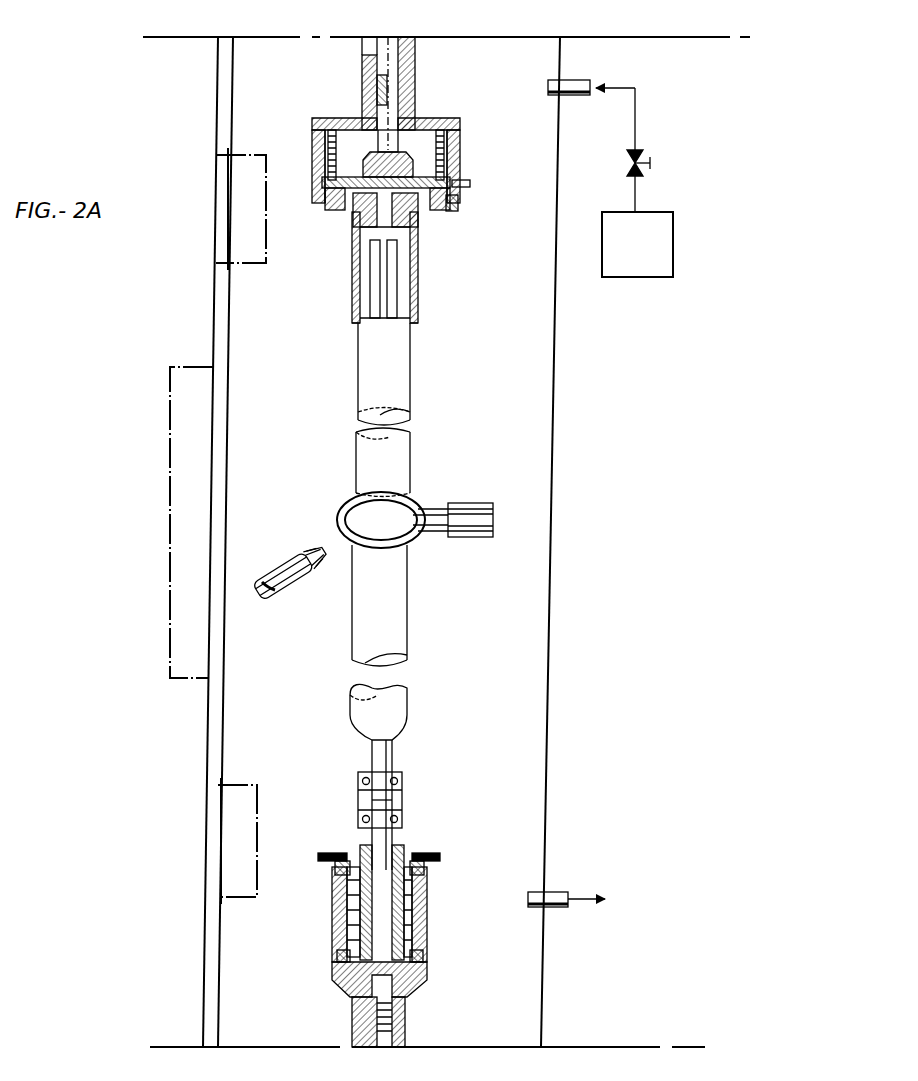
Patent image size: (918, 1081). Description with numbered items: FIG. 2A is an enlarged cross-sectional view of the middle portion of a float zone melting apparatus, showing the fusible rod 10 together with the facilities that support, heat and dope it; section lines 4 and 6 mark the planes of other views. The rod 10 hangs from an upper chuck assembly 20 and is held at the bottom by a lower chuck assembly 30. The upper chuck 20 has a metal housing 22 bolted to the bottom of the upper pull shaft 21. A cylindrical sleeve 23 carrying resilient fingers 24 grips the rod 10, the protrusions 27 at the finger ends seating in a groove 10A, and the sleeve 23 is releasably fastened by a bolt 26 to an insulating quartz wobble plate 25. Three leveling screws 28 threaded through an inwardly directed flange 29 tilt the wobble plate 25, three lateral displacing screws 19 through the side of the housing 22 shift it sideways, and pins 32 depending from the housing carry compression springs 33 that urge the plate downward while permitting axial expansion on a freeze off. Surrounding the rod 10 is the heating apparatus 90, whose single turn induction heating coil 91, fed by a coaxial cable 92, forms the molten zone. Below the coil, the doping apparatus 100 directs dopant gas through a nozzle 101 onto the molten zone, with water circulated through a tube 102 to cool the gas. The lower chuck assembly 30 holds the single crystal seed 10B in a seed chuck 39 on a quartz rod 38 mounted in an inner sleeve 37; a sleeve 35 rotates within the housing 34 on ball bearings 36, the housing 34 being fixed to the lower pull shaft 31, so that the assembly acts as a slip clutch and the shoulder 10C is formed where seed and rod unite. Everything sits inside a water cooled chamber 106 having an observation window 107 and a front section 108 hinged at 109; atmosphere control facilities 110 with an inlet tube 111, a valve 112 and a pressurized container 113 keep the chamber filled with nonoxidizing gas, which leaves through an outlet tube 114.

The section line 4- 4 is at (305, 140).
The section line 6- 6 is at (330, 522).
The rod 10 is at (424, 596).
The groove 10A is at (384, 374).
The single crystal seed 10B is at (378, 755).
The shoulder 10C is at (394, 735).
The lateral displacing screws 19 is at (472, 184).
The upper chuck assembly 20 is at (400, 194).
The upper pull shaft 21 is at (415, 58).
The housing 22 is at (460, 160).
The cylindrical sleeve 23 is at (418, 256).
The resilient fingers 24 is at (372, 300).
The wobble plate 25 is at (322, 183).
The bolt 26 is at (356, 222).
The protrusions 27 is at (355, 326).
The leveling screws 28 is at (330, 205).
The inwardly directed flange 29 is at (460, 203).
The lower chuck assembly 30 is at (418, 909).
The lower pull shaft 31 is at (352, 1020).
The pins 32 is at (333, 130).
The compression springs 33 is at (366, 145).
The housing 34 is at (340, 988).
The sleeve 35 is at (352, 905).
The ball bearings 36 is at (335, 866).
The inner sleeve 37 is at (366, 935).
The quartz rod 38 is at (402, 925).
The seed chuck 39 is at (403, 800).
The heating apparatus 90 is at (433, 507).
The induction heating coil 91 is at (412, 540).
The coaxial cable 92 is at (478, 540).
The doping apparatus 100 is at (278, 609).
The nozzle 101 is at (290, 571).
The tube 102 is at (255, 573).
The chamber 106 is at (548, 590).
The observation window 107 is at (170, 557).
The front section 108 is at (215, 700).
The hinges 109 is at (252, 264).
The atmosphere control facilities 110 is at (672, 187).
The inlet tube 111 is at (566, 82).
The valve 112 is at (630, 158).
The pressurized container 113 is at (666, 224).
The outlet tube 114 is at (540, 930).